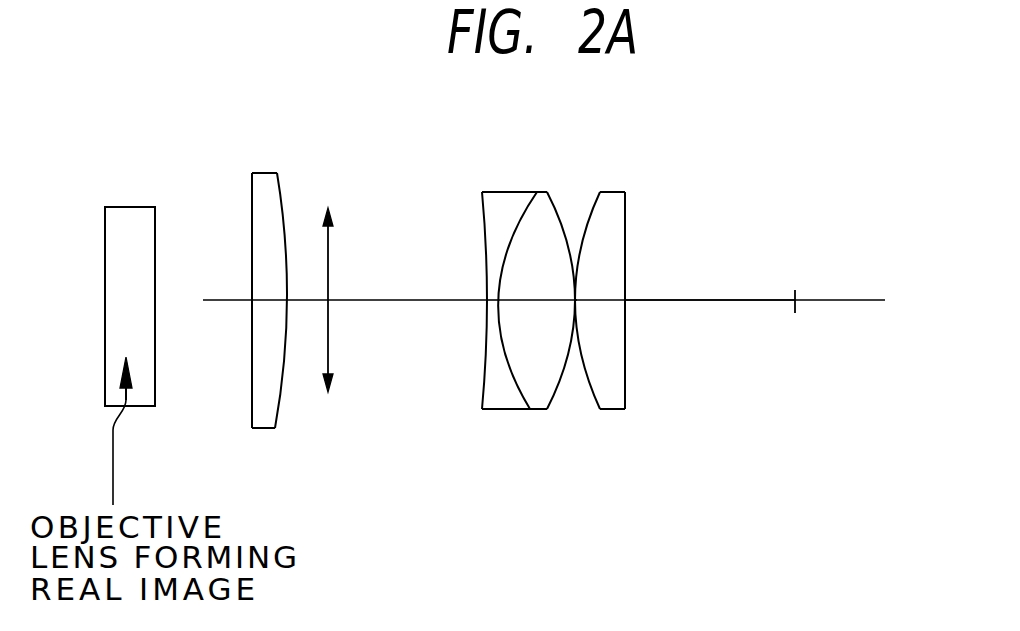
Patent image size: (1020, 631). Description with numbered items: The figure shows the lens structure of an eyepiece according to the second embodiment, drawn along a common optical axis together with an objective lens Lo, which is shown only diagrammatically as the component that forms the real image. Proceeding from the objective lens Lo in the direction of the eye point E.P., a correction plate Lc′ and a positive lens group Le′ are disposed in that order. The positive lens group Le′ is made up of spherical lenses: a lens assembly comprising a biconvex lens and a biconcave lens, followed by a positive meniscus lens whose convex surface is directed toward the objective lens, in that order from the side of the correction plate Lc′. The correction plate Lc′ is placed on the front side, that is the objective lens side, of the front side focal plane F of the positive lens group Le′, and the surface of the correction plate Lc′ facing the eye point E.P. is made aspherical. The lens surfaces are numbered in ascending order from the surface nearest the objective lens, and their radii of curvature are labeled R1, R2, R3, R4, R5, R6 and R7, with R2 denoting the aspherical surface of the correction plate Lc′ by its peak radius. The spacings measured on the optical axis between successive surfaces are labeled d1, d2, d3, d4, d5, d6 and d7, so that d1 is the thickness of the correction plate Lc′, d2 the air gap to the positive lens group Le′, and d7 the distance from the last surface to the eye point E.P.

The objective lens Lo is at (129, 222).
The correction plate Lc′ is at (249, 295).
The positive lens group Le′ is at (577, 298).
The front side focal plane F is at (330, 353).
The eye point E.P. is at (795, 283).
The radius of curvature of the first surface R1 is at (252, 403).
The radius of curvature of the second surface R2 is at (275, 403).
The radius of curvature of the third surface R3 is at (482, 393).
The radius of curvature of the fourth surface R4 is at (522, 397).
The radius of curvature of the fifth surface R5 is at (557, 397).
The radius of curvature of the sixth surface R6 is at (595, 405).
The radius of curvature of the seventh surface R7 is at (628, 397).
The spacing between the first and second surfaces d1 is at (268, 288).
The spacing between the second and third surfaces d2 is at (386, 288).
The spacing between the third and fourth surfaces d3 is at (493, 305).
The spacing between the fourth and fifth surfaces d4 is at (537, 288).
The spacing between the fifth and sixth surfaces d5 is at (577, 306).
The spacing between the sixth and seventh surfaces d6 is at (600, 288).
The spacing between the seventh surface and the eye point d7 is at (710, 288).